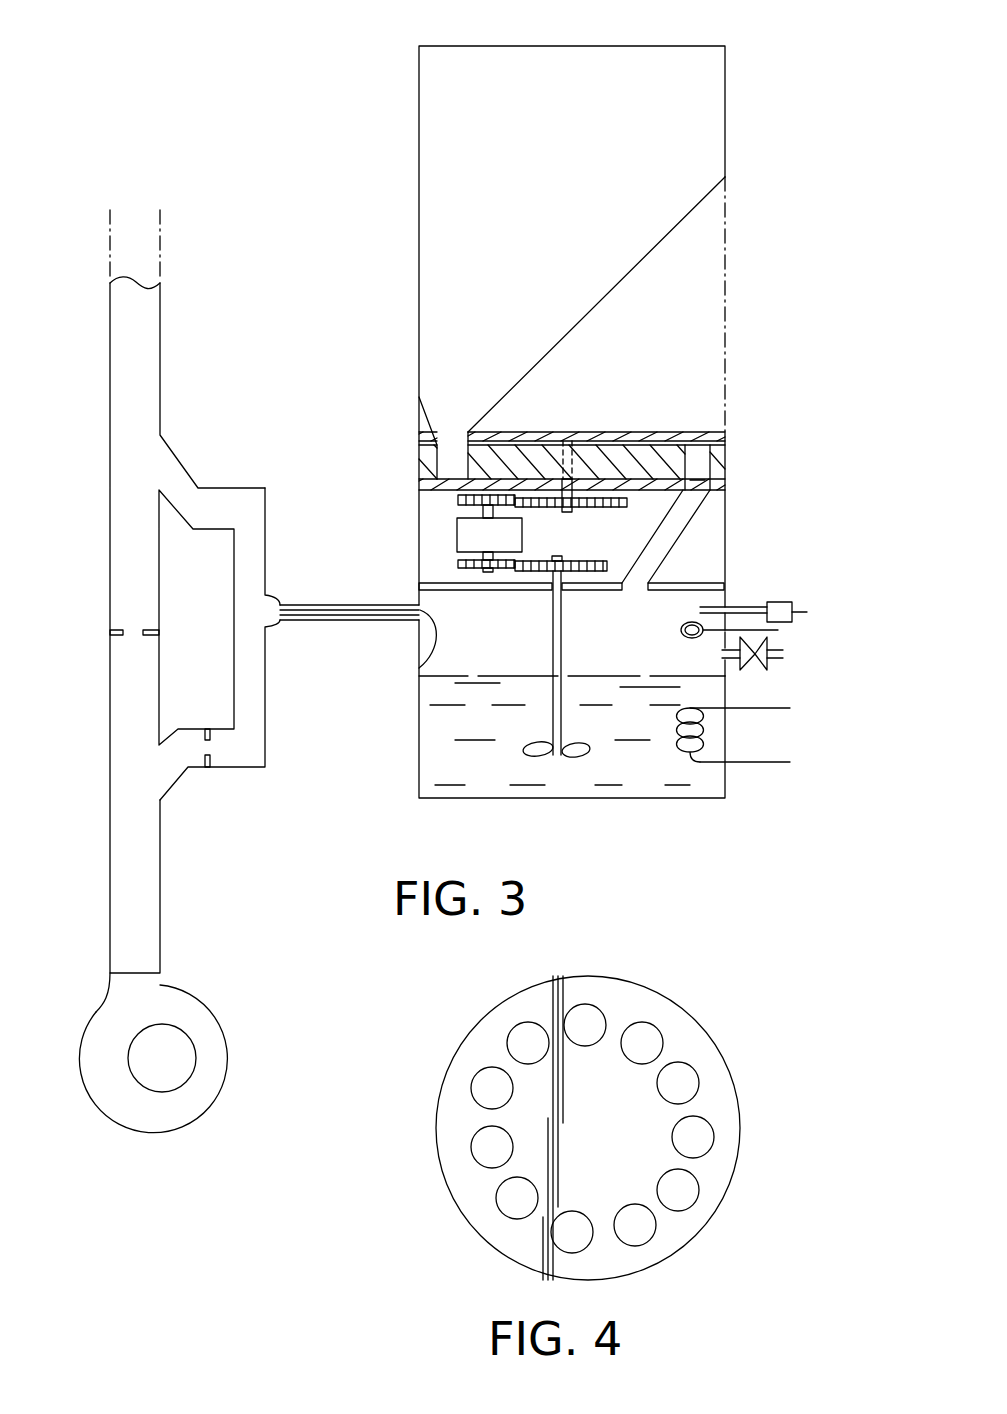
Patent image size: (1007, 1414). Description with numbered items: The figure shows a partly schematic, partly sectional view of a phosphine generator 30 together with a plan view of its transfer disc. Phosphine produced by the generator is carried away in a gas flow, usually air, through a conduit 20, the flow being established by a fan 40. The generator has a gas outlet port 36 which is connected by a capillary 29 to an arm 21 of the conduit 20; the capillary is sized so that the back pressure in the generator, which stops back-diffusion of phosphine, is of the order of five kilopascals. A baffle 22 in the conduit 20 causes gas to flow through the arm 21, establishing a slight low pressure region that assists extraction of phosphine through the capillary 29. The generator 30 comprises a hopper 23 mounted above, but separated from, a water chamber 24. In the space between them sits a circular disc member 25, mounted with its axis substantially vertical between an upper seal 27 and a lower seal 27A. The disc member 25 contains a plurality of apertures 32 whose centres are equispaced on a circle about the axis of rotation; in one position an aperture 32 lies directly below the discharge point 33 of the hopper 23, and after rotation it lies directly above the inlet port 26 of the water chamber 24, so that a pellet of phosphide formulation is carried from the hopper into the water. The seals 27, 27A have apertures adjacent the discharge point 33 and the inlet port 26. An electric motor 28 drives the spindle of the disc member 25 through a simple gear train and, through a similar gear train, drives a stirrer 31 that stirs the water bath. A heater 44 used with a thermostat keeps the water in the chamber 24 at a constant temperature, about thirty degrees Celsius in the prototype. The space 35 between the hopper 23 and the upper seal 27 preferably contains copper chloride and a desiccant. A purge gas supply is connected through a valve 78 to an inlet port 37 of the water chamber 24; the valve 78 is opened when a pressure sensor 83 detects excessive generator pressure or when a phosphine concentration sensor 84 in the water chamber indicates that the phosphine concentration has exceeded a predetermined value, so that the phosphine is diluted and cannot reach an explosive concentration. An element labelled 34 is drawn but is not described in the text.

In FIG. 3, the conduit 20 is at (147, 340).
In FIG. 3, the arm 21 is at (243, 737).
In FIG. 3, the baffle 22 is at (118, 628).
In FIG. 3, the hopper 23 is at (447, 170).
In FIG. 3, the water chamber 24 is at (419, 750).
In FIG. 3, the disc member 25 is at (628, 438).
In FIG. 4, the disc member 25 is at (685, 1040).
In FIG. 3, the inlet port 26 is at (667, 535).
In FIG. 3, the upper seal 27 is at (672, 435).
In FIG. 3, the lower seal 27A is at (448, 488).
In FIG. 3, the electric motor 28 is at (473, 533).
In FIG. 3, the capillary 29 is at (402, 620).
In FIG. 3, the phosphine generator 30 is at (397, 62).
In FIG. 3, the stirrer 31 is at (537, 752).
In FIG. 3, the aperture 32 is at (450, 467).
In FIG. 4, the aperture 32 is at (490, 1088).
In FIG. 3, the discharge point 33 is at (453, 432).
In FIG. 3, the aperture outlet 34 is at (697, 488).
In FIG. 3, the space 35 is at (665, 285).
In FIG. 3, the gas outlet port 36 is at (419, 668).
In FIG. 3, the inlet port 37 is at (718, 652).
In FIG. 3, the fan 40 is at (185, 1112).
In FIG. 3, the heater 44 is at (700, 762).
In FIG. 3, the valve 78 is at (755, 665).
In FIG. 3, the pressure sensor 83 is at (782, 602).
In FIG. 3, the phosphine concentration sensor 84 is at (682, 630).